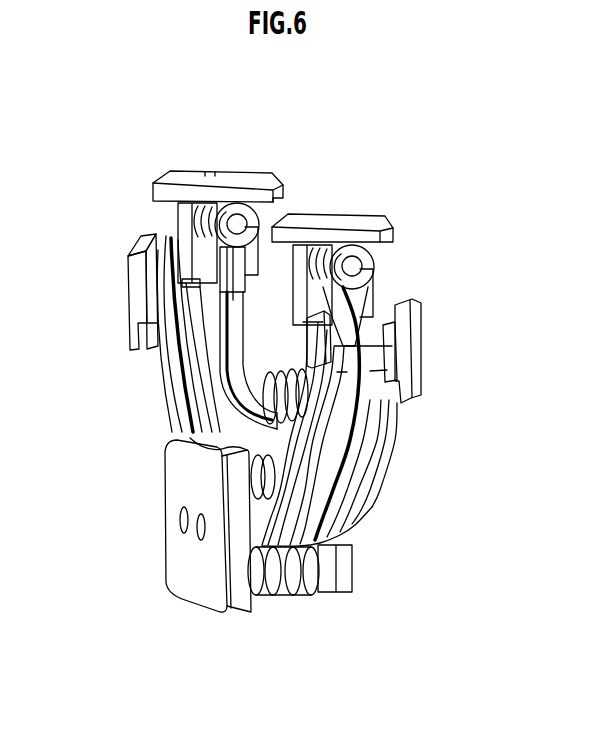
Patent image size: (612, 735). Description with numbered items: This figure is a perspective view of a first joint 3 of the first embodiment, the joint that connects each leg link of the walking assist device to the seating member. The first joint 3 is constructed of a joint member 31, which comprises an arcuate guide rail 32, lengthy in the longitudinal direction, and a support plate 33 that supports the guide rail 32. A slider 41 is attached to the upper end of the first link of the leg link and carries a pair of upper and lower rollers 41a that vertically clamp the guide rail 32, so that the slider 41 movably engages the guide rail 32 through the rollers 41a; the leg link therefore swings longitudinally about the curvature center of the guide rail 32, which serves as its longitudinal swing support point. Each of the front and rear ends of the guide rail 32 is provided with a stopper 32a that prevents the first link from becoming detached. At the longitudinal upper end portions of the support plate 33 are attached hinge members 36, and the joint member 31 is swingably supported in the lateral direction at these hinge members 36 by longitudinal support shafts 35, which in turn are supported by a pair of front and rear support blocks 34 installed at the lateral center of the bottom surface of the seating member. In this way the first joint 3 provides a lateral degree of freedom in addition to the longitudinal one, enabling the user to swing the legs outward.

The first joint 3 is at (440, 398).
The joint member 31 is at (267, 391).
The guide rail 32 is at (170, 403).
The stopper 32a is at (135, 300).
The support plate 33 is at (207, 350).
The support block 34 is at (360, 214).
The support shaft 35 is at (238, 222).
The hinge member 36 is at (177, 237).
The slider 41 is at (173, 527).
The roller 41a is at (222, 430).